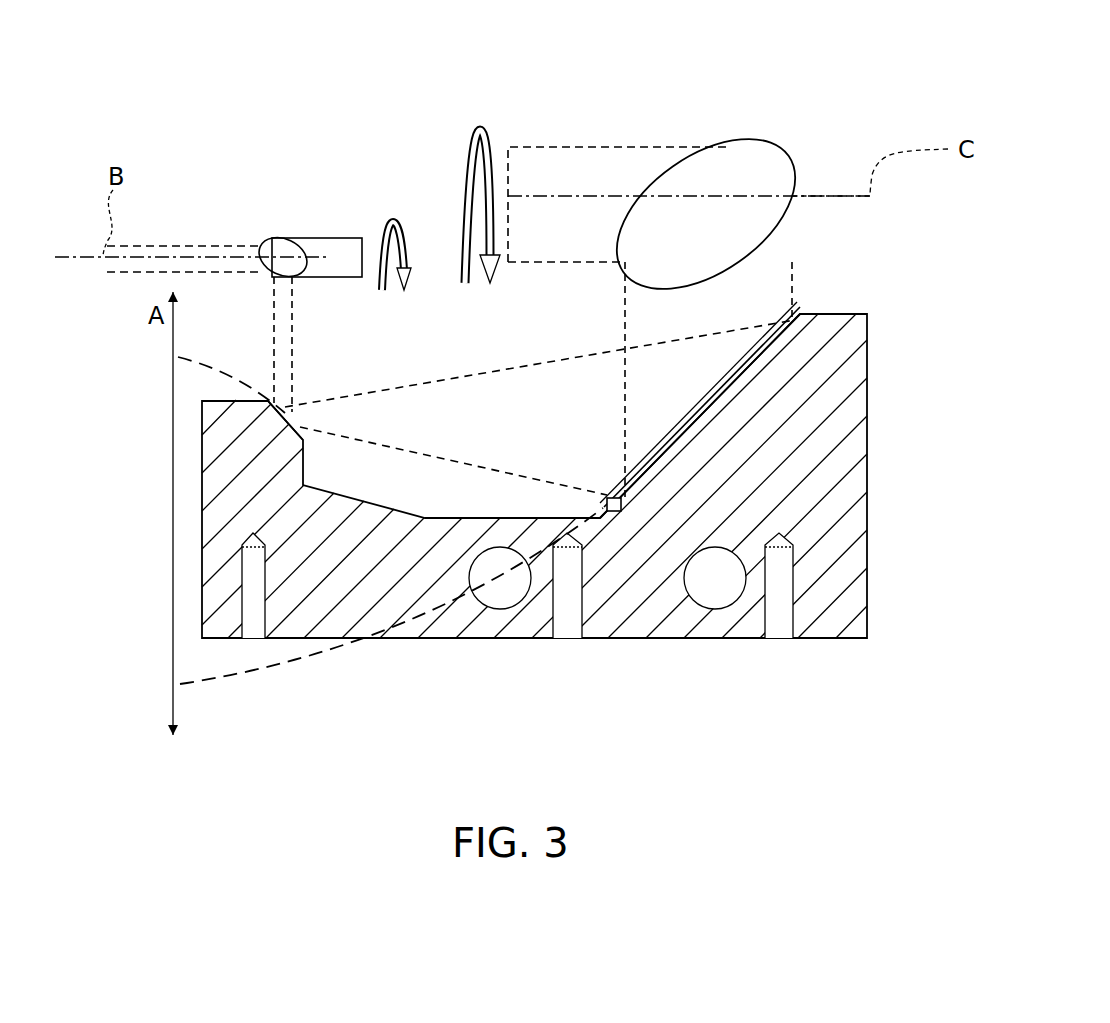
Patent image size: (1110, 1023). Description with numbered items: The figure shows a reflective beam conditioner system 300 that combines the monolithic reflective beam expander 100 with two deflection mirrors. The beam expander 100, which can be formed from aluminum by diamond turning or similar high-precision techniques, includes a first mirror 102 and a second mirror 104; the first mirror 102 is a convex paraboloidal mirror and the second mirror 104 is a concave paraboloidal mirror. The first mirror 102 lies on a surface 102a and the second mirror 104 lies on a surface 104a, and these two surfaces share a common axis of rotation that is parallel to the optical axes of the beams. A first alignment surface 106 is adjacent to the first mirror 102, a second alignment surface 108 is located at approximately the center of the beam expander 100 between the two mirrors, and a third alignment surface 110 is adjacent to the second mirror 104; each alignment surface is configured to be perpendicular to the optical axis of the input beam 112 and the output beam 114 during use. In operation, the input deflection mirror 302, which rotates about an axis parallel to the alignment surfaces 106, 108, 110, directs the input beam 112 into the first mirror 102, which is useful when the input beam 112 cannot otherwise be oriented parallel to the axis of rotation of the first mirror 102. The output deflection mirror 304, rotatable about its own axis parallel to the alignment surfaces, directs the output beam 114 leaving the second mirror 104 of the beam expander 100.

The beam expander 100 is at (703, 688).
The first mirror 102 is at (290, 415).
The surface 102a is at (222, 368).
The second mirror 104 is at (673, 438).
The surface 104a is at (197, 688).
The first alignment surface 106 is at (218, 393).
The second alignment surface 108 is at (460, 520).
The third alignment surface 110 is at (836, 314).
The input beam 112 is at (298, 360).
The output beam 114 is at (607, 323).
The reflective beam conditioner system 300 is at (215, 168).
The input deflection mirror 302 is at (303, 238).
The output deflection mirror 304 is at (793, 168).